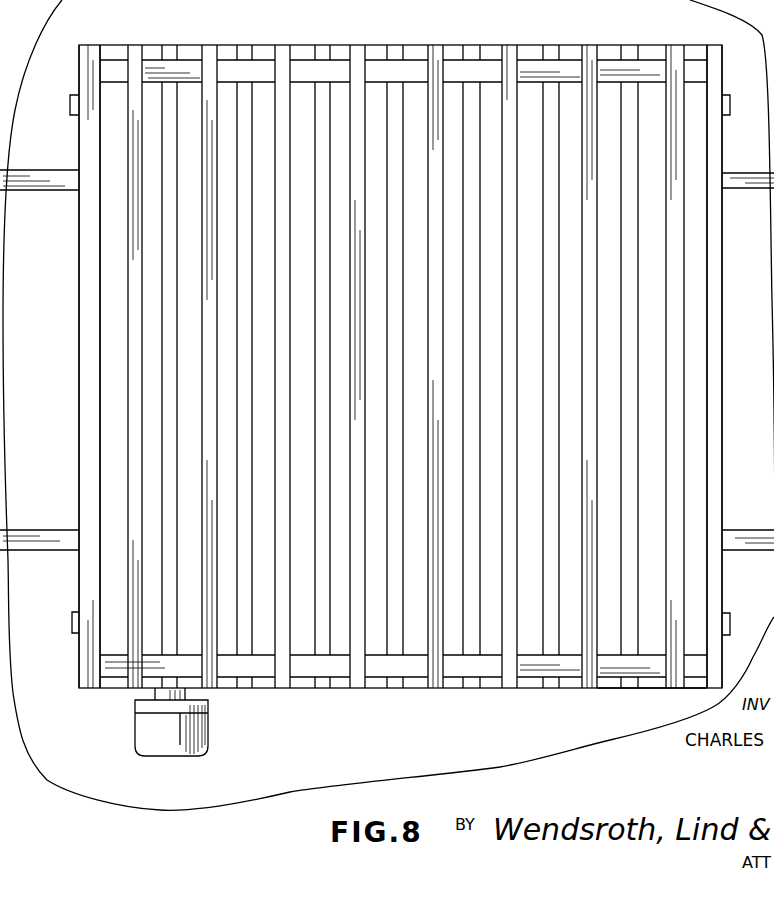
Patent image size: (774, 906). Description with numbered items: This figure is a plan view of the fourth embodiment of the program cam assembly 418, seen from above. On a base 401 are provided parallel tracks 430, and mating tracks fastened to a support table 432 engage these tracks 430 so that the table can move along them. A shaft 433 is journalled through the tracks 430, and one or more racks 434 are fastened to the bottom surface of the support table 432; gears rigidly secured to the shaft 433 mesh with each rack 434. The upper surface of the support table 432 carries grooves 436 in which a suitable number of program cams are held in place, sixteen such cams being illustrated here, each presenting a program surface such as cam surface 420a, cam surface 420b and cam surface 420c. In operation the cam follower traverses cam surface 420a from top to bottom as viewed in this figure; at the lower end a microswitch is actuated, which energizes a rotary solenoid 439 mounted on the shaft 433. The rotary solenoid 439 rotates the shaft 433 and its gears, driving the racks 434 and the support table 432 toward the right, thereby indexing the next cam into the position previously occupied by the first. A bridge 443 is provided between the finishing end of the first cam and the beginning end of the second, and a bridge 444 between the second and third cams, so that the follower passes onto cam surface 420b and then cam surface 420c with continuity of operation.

The base 401 is at (284, 777).
The program cam assembly 418 is at (231, 740).
The cam surface 420a is at (698, 167).
The cam surface 420b is at (653, 419).
The cam surface 420c is at (612, 637).
The parallel tracks 430 is at (28, 178).
The support table 432 is at (86, 668).
The shaft 433 is at (153, 695).
The racks 434 is at (72, 98).
The grooves 436 is at (607, 680).
The rotary solenoid 439 is at (142, 733).
The bridge 443 is at (697, 660).
The bridge 444 is at (652, 72).